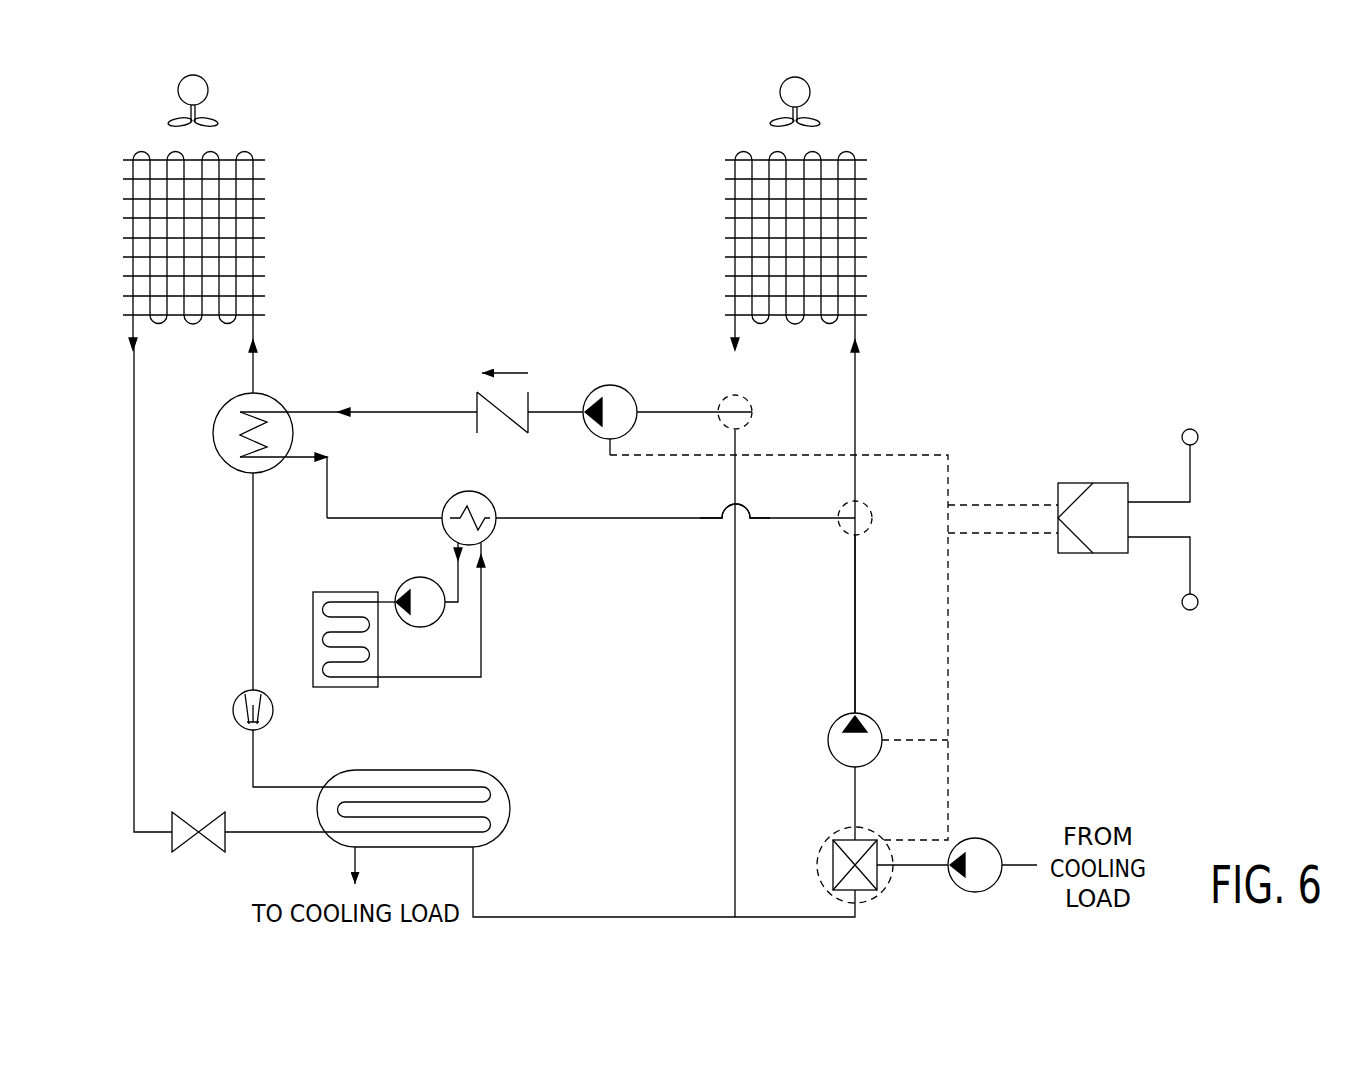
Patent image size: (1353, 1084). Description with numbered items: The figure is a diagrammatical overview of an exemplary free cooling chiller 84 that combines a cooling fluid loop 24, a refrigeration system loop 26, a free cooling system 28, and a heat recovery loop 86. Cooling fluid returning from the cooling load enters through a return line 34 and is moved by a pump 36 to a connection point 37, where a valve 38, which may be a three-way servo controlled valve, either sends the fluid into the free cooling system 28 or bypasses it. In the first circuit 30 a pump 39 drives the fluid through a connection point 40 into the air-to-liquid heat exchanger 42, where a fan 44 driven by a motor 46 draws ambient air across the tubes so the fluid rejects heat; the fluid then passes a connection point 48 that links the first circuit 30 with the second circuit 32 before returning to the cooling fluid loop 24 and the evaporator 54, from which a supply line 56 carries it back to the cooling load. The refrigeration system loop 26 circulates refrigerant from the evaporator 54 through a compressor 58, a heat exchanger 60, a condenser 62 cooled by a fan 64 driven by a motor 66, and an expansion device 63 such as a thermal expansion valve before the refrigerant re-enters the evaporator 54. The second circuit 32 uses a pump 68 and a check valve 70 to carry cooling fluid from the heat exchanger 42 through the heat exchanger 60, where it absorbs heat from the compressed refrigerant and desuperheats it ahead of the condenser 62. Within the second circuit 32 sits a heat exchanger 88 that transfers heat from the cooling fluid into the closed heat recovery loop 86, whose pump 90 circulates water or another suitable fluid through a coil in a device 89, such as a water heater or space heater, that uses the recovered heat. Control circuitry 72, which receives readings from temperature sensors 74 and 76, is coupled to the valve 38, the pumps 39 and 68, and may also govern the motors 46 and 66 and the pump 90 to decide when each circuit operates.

The cooling fluid loop 24 is at (650, 912).
The refrigeration system loop 26 is at (118, 510).
The free cooling system 28 is at (708, 527).
The first circuit 30 is at (857, 632).
The second circuit 32 is at (525, 522).
The return line 34 is at (1020, 868).
The pump 36 is at (995, 843).
The connection point 37 is at (882, 900).
The valve 38 is at (848, 838).
The pump 39 is at (873, 720).
The connection point 40 is at (870, 506).
The air-to-liquid heat exchanger 42 is at (845, 158).
The fan 44 is at (775, 118).
The motor 46 is at (812, 118).
The connection point 48 is at (752, 402).
The evaporator 54 is at (470, 770).
The supply line 56 is at (360, 866).
The compressor 58 is at (236, 700).
The heat exchanger 60 is at (228, 404).
The condenser 62 is at (142, 158).
The expansion device 63 is at (210, 820).
The fan 64 is at (222, 118).
The motor 66 is at (180, 118).
The pump 68 is at (628, 390).
The check valve 70 is at (477, 428).
The control circuitry 72 is at (1110, 483).
The temperature sensor 74 is at (1196, 430).
The temperature sensor 76 is at (1198, 608).
The chiller 84 is at (978, 292).
The heat recovery loop 86 is at (490, 622).
The heat exchanger 88 is at (490, 500).
The device 89 is at (346, 592).
The pump 90 is at (408, 582).